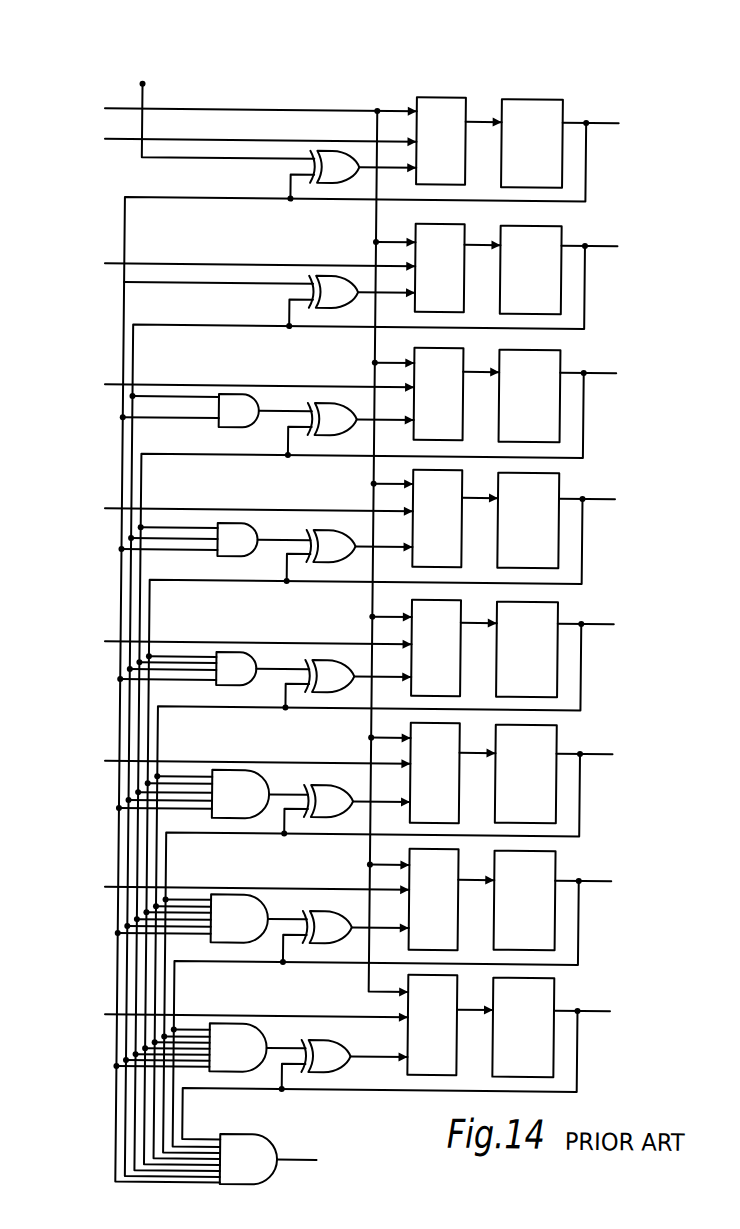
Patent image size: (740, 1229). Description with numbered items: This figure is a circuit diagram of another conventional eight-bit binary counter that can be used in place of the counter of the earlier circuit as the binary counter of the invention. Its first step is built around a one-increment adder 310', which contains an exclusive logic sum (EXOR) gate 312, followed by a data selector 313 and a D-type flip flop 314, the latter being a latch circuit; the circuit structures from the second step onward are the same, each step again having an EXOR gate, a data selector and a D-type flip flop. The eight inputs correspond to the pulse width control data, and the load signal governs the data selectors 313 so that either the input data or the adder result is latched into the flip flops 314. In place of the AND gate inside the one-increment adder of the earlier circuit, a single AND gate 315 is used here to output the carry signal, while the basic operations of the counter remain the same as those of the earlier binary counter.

The one-increment adder 310' is at (341, 613).
The exclusive logic sum (EXOR) gate 312 is at (335, 184).
The data selector 313 is at (428, 97).
The D-type flip flop 314 is at (523, 98).
The AND gate 315 is at (285, 1139).